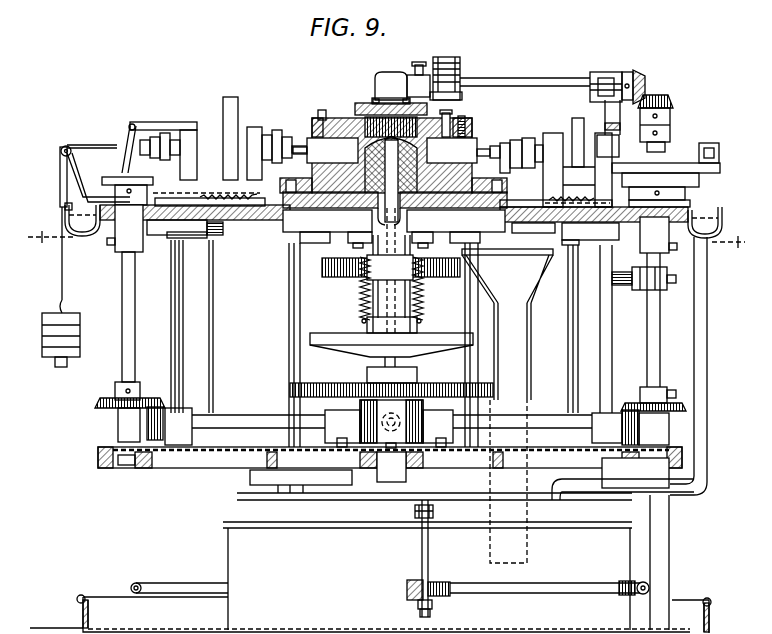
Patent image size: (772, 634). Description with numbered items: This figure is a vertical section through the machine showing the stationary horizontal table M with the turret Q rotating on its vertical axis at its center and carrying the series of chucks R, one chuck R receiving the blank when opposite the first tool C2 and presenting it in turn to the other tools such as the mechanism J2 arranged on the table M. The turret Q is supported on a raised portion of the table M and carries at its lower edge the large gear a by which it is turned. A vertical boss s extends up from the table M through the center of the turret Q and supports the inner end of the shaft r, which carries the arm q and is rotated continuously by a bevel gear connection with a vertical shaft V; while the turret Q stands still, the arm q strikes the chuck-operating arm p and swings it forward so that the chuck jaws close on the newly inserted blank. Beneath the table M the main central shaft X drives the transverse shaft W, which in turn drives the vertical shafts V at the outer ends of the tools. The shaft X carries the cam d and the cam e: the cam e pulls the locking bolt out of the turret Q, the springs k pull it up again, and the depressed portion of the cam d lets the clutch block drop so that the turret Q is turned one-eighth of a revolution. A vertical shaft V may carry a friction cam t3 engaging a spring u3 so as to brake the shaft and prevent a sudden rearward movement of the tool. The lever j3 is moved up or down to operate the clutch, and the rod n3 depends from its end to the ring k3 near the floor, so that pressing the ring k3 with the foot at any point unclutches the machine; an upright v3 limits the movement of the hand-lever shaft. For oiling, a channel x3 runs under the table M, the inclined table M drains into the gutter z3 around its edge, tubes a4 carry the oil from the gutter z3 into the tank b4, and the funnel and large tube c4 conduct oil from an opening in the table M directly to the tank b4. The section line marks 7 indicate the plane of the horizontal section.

The section line 7 7 is at (389, 240).
The tool and operating mechanism J2 is at (204, 149).
The chuck R is at (452, 151).
The chuck-operating arm p is at (451, 116).
The turret Q is at (463, 136).
The vertical boss s is at (378, 125).
The arm q is at (459, 70).
The shaft r is at (489, 84).
The tool and operating mechanism C2 is at (605, 157).
The gutter z3 is at (721, 218).
The large gear a is at (327, 222).
The main central shaft X is at (416, 380).
The table M is at (233, 240).
The oil channel x3 is at (222, 236).
The upright v3 is at (192, 326).
The cam e is at (426, 277).
The springs k is at (423, 322).
The cam d is at (348, 335).
The transverse shaft W is at (560, 409).
The rod n3 is at (429, 556).
The lever j3 is at (434, 512).
The ring k3 is at (173, 588).
The funnel and large tube c4 is at (507, 324).
The tank b4 is at (523, 487).
The vertical shaft V is at (651, 324).
The friction cam t3 is at (637, 290).
The spring u3 is at (620, 272).
The tube a4 is at (705, 322).